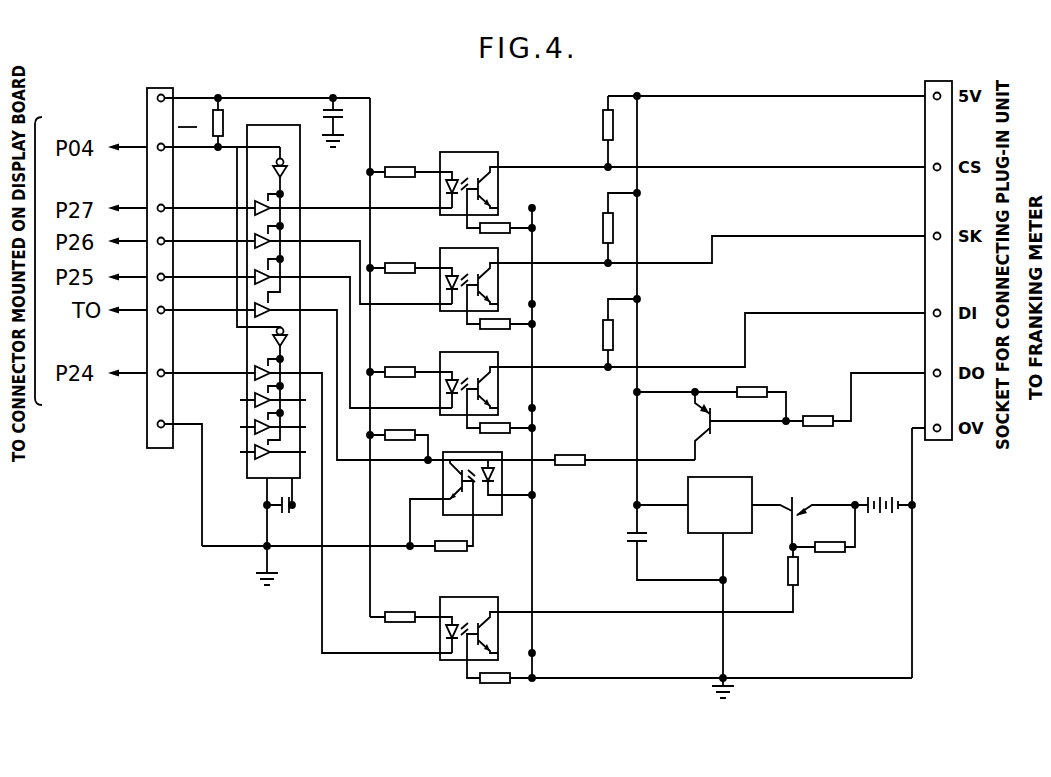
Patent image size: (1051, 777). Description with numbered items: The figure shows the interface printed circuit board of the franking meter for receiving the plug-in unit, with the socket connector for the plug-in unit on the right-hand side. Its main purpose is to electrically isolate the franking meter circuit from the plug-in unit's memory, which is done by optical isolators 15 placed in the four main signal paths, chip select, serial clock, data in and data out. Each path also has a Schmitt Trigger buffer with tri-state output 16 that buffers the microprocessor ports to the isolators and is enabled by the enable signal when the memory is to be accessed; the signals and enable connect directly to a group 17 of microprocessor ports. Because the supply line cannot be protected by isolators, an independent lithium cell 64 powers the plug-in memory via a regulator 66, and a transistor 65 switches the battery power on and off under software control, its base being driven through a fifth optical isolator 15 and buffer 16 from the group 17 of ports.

The optical isolator 15 is at (466, 152).
The Schmitt Trigger buffer with tri-state output 16 is at (300, 198).
The group of microprocessor ports 17 is at (104, 126).
The lithium cell 64 is at (878, 496).
The transistor 65 is at (794, 493).
The regulator 66 is at (712, 477).